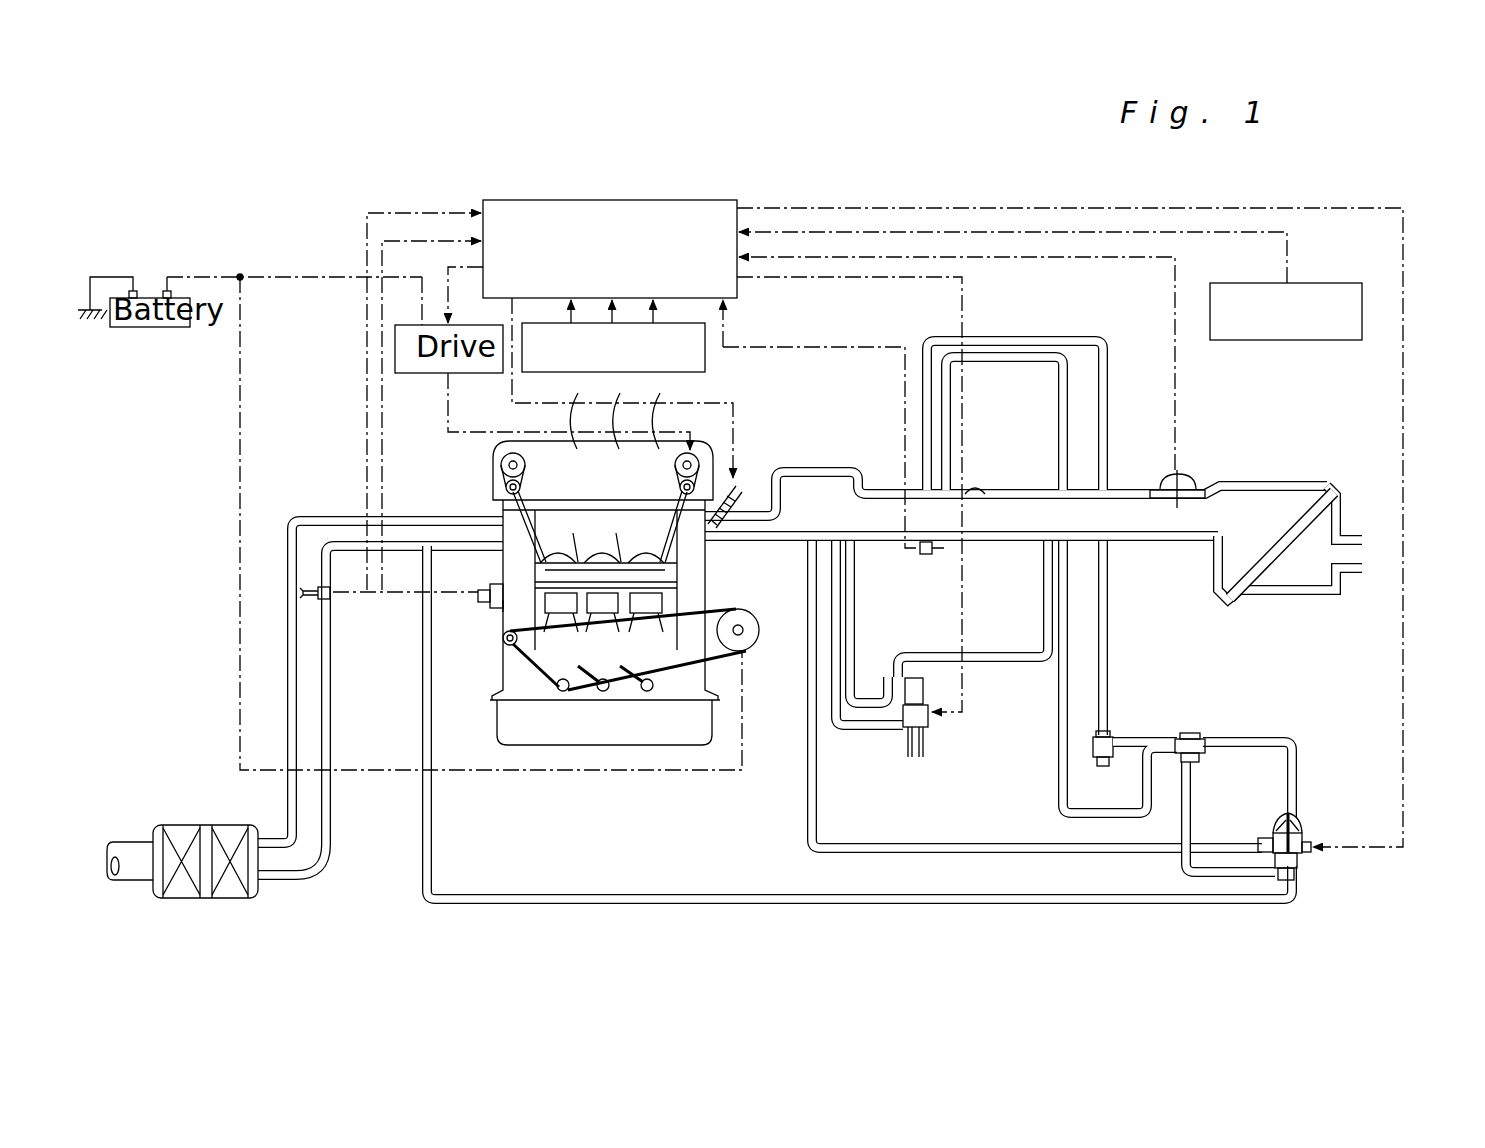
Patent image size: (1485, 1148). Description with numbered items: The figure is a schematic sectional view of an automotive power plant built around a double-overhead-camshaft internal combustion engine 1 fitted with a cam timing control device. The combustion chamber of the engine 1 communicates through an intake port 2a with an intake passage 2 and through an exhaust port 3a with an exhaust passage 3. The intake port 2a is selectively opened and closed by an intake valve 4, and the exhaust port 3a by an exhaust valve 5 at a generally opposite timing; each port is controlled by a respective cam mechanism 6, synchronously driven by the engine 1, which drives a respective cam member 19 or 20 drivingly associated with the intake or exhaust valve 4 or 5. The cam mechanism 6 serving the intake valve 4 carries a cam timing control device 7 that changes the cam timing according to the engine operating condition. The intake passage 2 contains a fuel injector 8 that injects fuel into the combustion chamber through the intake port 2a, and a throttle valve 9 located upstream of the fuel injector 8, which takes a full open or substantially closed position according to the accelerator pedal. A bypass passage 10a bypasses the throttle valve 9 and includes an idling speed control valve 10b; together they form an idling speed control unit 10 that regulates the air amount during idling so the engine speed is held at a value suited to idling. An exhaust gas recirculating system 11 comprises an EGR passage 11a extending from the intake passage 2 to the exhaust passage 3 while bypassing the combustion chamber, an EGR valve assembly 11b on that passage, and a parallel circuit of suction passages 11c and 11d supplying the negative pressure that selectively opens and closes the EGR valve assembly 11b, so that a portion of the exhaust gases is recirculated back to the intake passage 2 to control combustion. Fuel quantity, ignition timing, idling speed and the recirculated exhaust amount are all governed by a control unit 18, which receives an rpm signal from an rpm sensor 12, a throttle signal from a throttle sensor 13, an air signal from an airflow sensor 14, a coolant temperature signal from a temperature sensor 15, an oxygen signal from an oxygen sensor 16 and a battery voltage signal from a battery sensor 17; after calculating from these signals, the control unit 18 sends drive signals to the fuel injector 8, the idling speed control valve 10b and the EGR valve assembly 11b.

The internal combustion engine 1 is at (496, 706).
The intake passage 2 is at (792, 547).
The intake port 2a is at (670, 566).
The exhaust passage 3 is at (332, 680).
The exhaust port 3a is at (503, 606).
The intake valve 4 is at (705, 526).
The exhaust valve 5 is at (530, 540).
The cam mechanism 6 is at (498, 477).
The cam timing control device 7 is at (697, 455).
The fuel injector 8 is at (742, 492).
The throttle valve 9 is at (925, 515).
The idling speed control unit 10 is at (898, 735).
The bypass passage 10a is at (1003, 660).
The idling speed control valve 10b is at (930, 722).
The exhaust gas recirculating (EGR) system 11 is at (1309, 814).
The EGR passage 11a is at (1066, 874).
The EGR valve assembly 11b is at (1300, 862).
The suction passage 11c is at (1108, 632).
The suction passage 11d is at (1058, 738).
The rpm sensor 12 is at (705, 356).
The throttle sensor 13 is at (927, 556).
The airflow sensor 14 is at (1190, 477).
The temperature sensor 15 is at (478, 597).
The oxygen sensor 16 is at (340, 600).
The battery sensor 17 is at (1310, 341).
The control unit (ECU) 18 is at (740, 289).
The cam member 19 is at (658, 408).
The cam member 20 is at (497, 488).